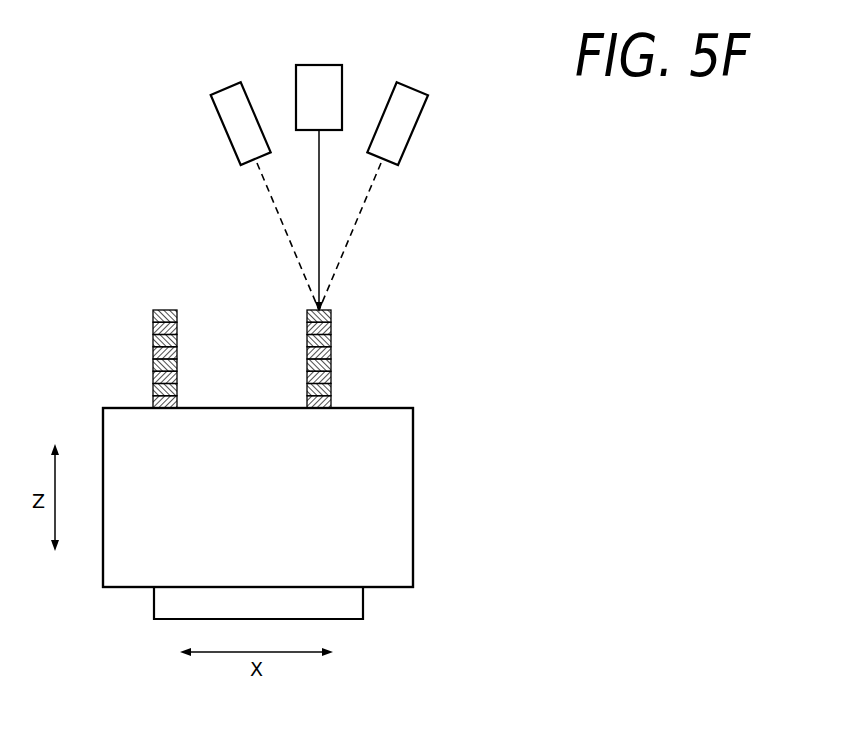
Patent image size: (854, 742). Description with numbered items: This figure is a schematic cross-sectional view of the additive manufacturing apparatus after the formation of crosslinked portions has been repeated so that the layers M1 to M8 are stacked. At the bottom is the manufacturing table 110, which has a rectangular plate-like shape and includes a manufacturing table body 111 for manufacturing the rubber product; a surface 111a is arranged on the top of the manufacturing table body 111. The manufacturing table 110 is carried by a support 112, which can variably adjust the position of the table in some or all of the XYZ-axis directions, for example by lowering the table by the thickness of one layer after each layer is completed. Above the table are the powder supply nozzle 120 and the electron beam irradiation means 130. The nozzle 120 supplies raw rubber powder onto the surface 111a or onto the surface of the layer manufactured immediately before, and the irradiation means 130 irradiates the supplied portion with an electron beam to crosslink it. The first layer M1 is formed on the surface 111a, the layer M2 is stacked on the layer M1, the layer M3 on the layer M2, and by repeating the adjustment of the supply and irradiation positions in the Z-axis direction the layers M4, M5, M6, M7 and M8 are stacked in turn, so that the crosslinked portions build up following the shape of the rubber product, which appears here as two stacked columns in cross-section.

The manufacturing table 110 is at (440, 459).
The manufacturing table body 111 is at (387, 523).
The surface 111a is at (242, 408).
The support 112 is at (357, 603).
The powder supply nozzle 120 is at (228, 88).
The electron beam irradiation means 130 is at (319, 65).
The layer M1 is at (153, 402).
The layer M2 is at (153, 390).
The layer M3 is at (153, 380).
The layer M4 is at (153, 364).
The layer M5 is at (177, 353).
The layer M6 is at (177, 341).
The layer M7 is at (177, 328).
The layer M8 is at (177, 315).